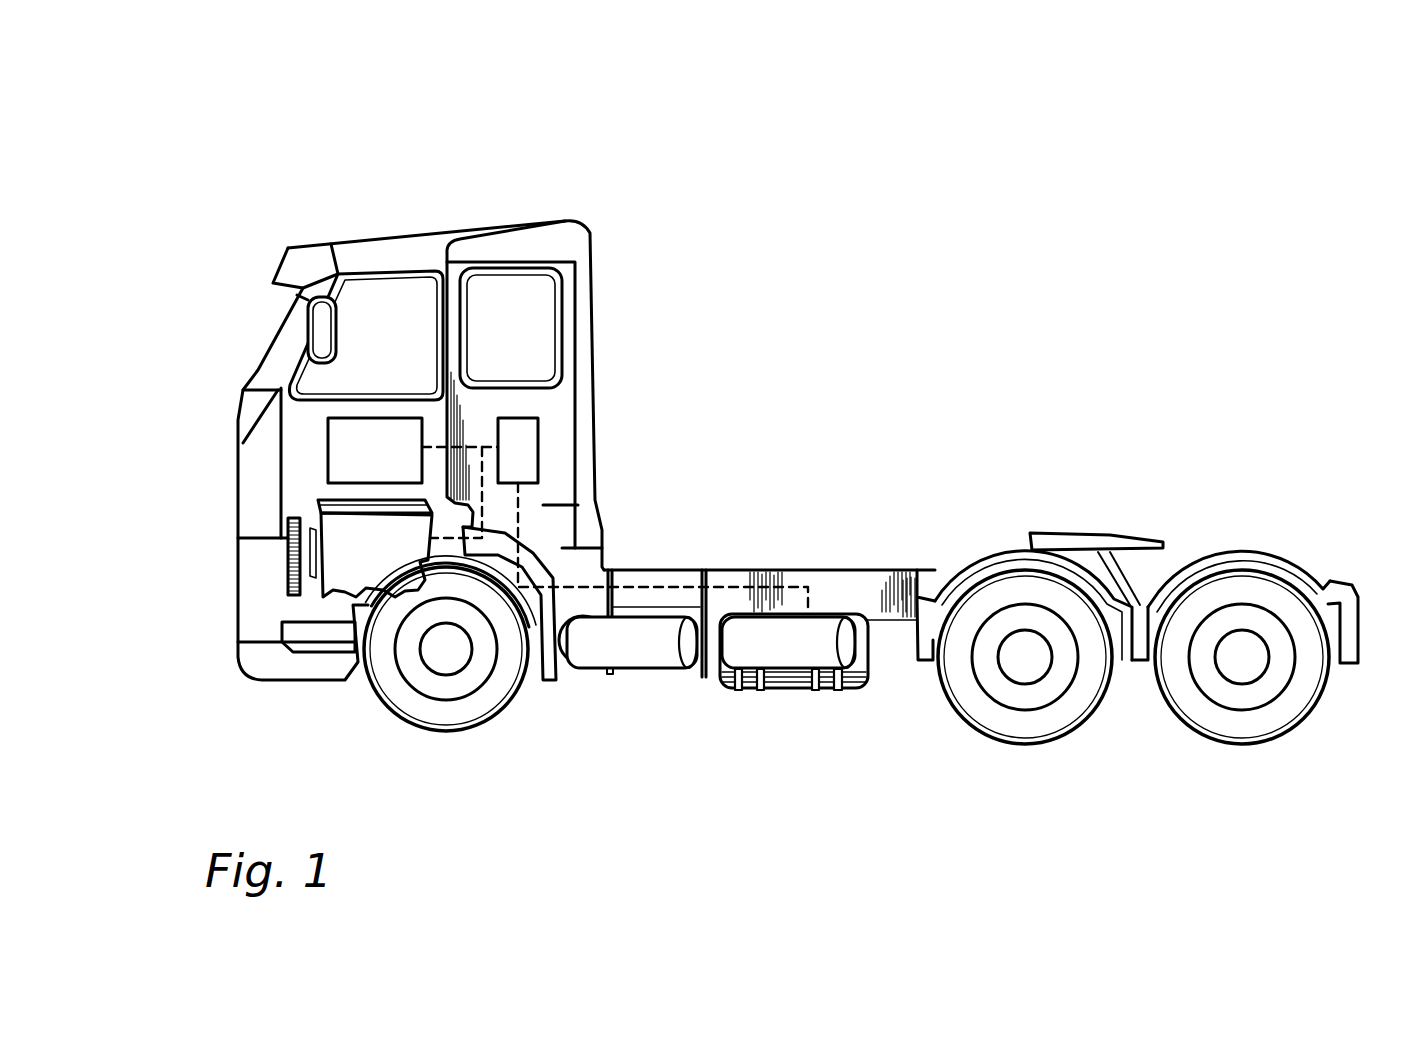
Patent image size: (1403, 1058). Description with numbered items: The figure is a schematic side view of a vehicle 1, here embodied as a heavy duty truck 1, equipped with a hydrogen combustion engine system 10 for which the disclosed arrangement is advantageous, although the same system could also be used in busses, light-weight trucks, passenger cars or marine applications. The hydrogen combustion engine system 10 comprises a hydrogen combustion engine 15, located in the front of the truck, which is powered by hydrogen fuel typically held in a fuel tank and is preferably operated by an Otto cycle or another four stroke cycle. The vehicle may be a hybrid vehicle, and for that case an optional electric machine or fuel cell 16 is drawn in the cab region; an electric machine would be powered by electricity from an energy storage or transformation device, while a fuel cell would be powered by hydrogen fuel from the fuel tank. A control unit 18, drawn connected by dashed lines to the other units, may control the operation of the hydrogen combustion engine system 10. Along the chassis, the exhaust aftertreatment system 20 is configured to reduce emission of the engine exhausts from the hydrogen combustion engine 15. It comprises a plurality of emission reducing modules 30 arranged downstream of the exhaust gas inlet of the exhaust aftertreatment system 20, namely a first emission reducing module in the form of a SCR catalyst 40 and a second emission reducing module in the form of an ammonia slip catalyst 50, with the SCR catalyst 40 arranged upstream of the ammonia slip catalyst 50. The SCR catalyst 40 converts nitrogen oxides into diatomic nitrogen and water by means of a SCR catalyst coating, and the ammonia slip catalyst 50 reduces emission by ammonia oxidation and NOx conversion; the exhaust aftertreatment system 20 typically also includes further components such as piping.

The vehicle 1 is at (290, 137).
The hydrogen combustion engine system 10 is at (212, 728).
The hydrogen combustion engine 15 is at (323, 594).
The electric machine or fuel cell 16 is at (374, 450).
The control unit 18 is at (540, 447).
The exhaust aftertreatment system 20 is at (522, 766).
The emission reducing modules 30 is at (878, 760).
The SCR catalyst 40 is at (628, 668).
The ammonia slip catalyst 50 is at (788, 690).